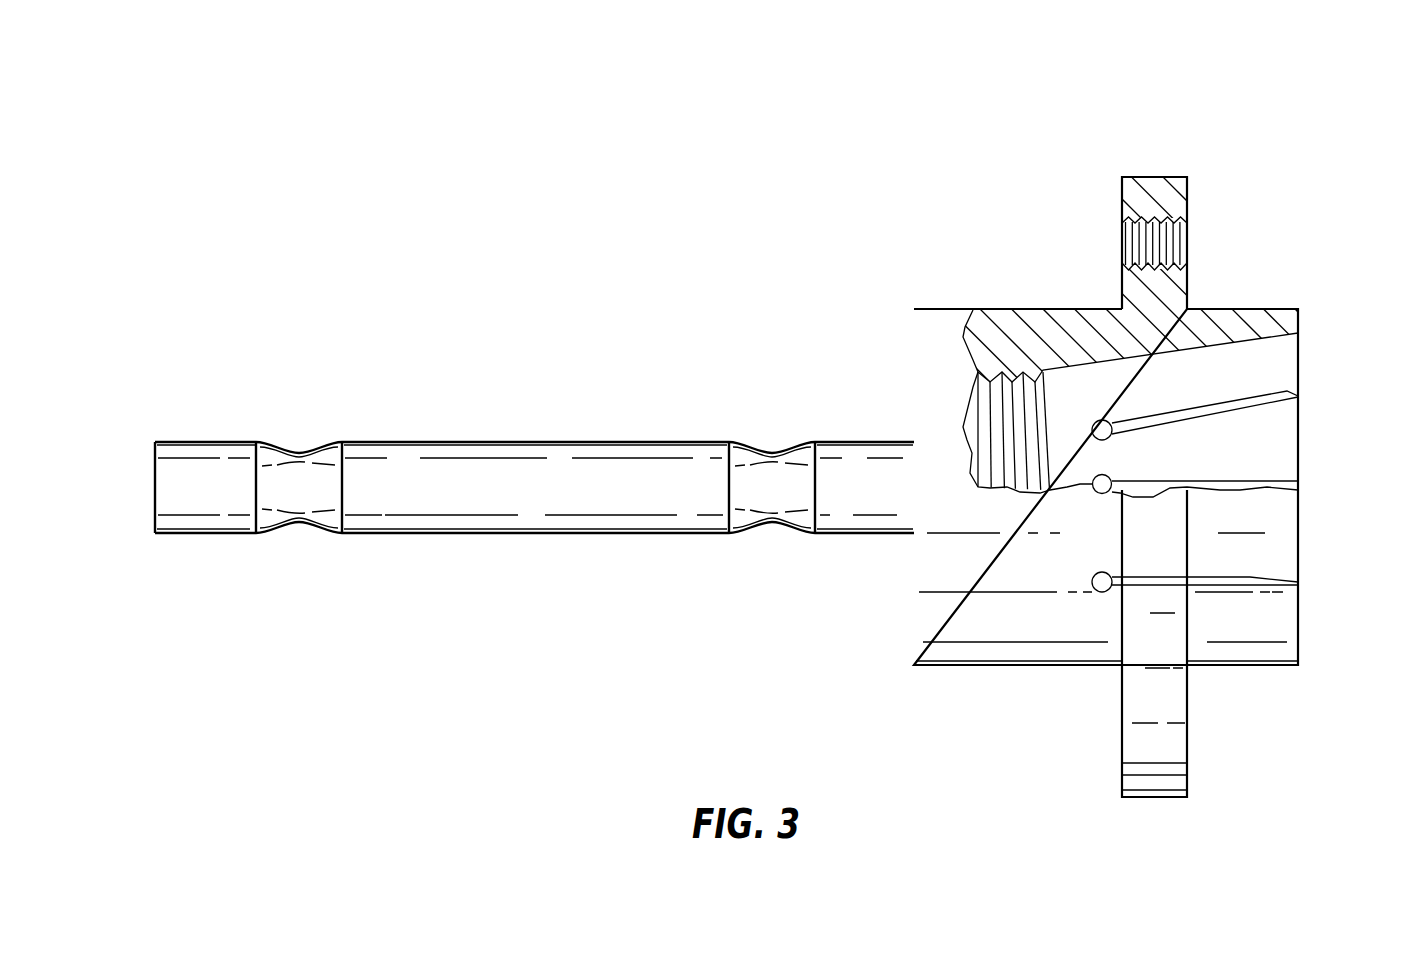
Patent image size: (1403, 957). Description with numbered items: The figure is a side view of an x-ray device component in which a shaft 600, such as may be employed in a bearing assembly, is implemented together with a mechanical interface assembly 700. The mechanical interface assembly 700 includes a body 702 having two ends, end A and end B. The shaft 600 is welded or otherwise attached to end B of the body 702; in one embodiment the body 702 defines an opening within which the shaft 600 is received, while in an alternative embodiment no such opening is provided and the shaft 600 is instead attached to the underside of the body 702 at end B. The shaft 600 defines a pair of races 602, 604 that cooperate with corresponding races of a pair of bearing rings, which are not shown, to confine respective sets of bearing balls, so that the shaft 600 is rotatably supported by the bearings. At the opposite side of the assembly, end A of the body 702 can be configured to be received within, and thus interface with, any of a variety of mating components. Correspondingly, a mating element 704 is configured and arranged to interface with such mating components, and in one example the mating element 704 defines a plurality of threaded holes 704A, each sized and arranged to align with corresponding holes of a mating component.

The shaft 600 is at (534, 503).
The race 602 is at (300, 540).
The race 604 is at (766, 540).
The mechanical interface assembly 700 is at (1065, 455).
The body 702 is at (1050, 667).
The mating element 704 is at (1237, 509).
The threaded holes 704A is at (1187, 250).
The end A is at (1315, 328).
The end B is at (921, 300).